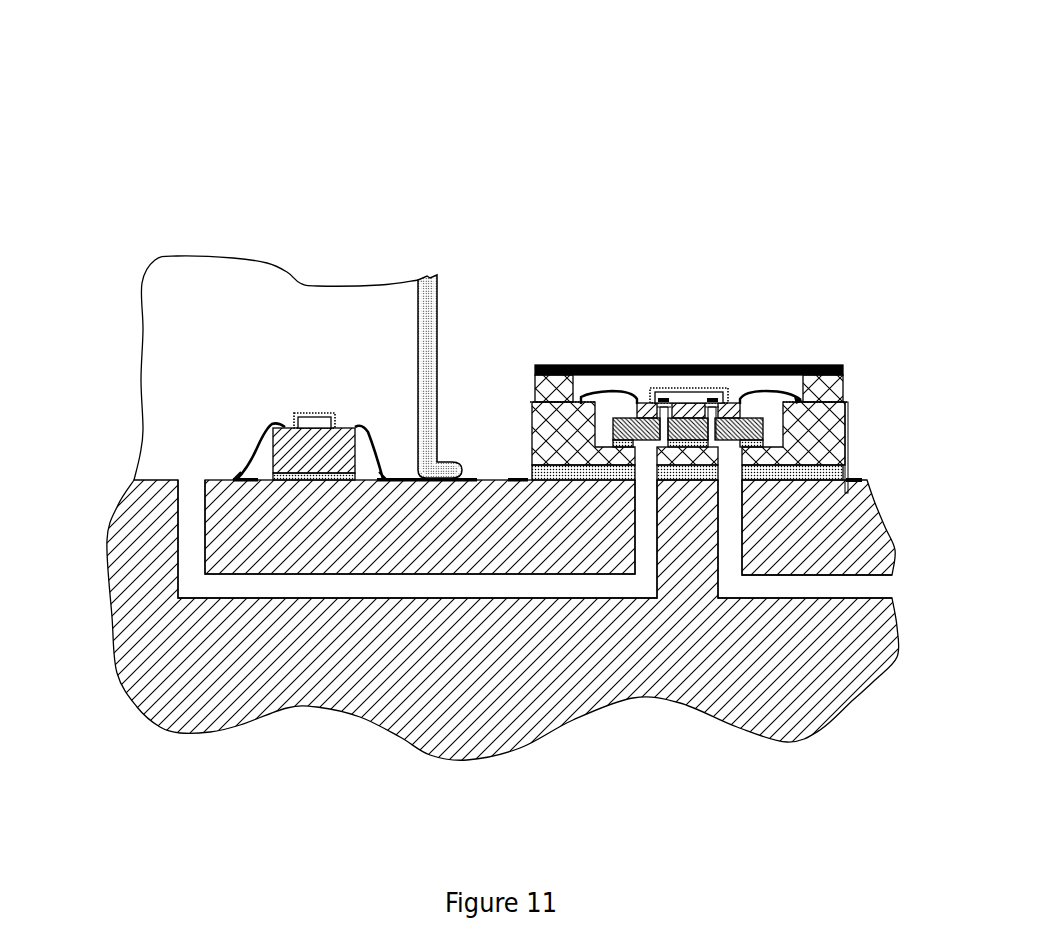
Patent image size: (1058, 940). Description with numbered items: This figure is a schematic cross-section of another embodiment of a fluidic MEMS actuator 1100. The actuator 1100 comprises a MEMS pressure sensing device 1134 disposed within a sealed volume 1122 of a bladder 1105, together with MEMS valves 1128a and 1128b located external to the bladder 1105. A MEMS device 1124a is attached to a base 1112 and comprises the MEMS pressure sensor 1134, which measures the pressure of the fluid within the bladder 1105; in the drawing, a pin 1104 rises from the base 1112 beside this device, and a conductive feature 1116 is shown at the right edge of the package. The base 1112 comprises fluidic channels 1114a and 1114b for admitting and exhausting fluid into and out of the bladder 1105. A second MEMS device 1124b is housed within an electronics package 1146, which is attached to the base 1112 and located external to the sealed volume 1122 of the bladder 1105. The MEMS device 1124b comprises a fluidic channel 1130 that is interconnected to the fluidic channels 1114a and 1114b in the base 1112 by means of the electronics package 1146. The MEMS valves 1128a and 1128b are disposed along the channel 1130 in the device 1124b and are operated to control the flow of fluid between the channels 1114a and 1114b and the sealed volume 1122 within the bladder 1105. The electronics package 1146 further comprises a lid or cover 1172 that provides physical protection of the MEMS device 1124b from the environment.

The fluidic MEMS actuator 1100 is at (578, 128).
The pin 1104 is at (428, 318).
The bladder 1105 is at (458, 302).
The base 1112 is at (542, 697).
The fluidic channel 1114a is at (243, 590).
The fluidic channel 1114b is at (795, 590).
The conductive via 1116 is at (858, 478).
The sealed volume 1122 is at (234, 314).
The MEMS device 1124a is at (218, 401).
The MEMS device 1124b is at (726, 331).
The MEMS valve 1128a is at (650, 388).
The MEMS valve 1128b is at (708, 390).
The fluidic channel 1130 is at (683, 398).
The MEMS pressure sensor 1134 is at (327, 405).
The electronics package 1146 is at (573, 439).
The lid 1172 is at (575, 371).